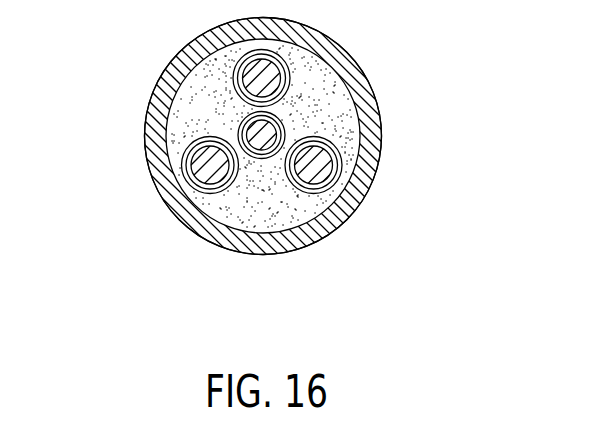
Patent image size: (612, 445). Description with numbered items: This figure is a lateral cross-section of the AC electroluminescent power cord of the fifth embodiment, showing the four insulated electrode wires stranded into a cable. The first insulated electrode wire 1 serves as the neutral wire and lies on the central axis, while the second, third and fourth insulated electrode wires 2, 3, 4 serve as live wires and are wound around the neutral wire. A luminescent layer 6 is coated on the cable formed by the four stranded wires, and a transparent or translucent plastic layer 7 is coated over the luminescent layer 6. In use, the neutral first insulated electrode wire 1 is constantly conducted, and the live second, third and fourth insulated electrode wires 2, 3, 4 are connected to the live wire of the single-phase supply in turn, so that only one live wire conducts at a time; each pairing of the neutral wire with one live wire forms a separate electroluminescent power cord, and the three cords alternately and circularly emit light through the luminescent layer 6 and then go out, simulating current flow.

The first insulated electrode wire 1 is at (300, 107).
The second insulated electrode wire 2 is at (340, 228).
The third insulated electrode wire 3 is at (190, 146).
The fourth insulated electrode wire 4 is at (172, 66).
The luminescent layer 6 is at (260, 220).
The transparent or translucent plastic layer 7 is at (223, 240).